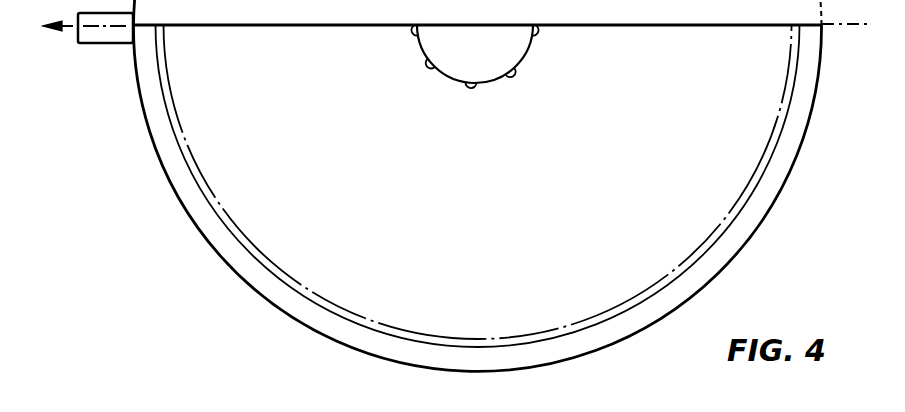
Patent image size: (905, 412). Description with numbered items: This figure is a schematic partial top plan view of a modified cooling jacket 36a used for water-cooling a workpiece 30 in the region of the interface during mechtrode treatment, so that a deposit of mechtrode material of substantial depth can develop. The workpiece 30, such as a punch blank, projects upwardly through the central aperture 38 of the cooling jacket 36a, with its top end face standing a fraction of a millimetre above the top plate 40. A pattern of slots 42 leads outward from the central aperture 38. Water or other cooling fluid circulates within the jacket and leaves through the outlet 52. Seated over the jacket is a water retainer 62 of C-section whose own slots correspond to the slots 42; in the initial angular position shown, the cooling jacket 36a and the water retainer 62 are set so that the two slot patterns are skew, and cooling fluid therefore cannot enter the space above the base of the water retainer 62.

The workpiece 30 is at (519, 46).
The cooling jacket 36a is at (757, 233).
The central aperture 38 is at (448, 81).
The top plate 40 is at (493, 259).
The slots 42 is at (425, 70).
The outlet 52 is at (103, 44).
The water retainer 62 is at (767, 180).